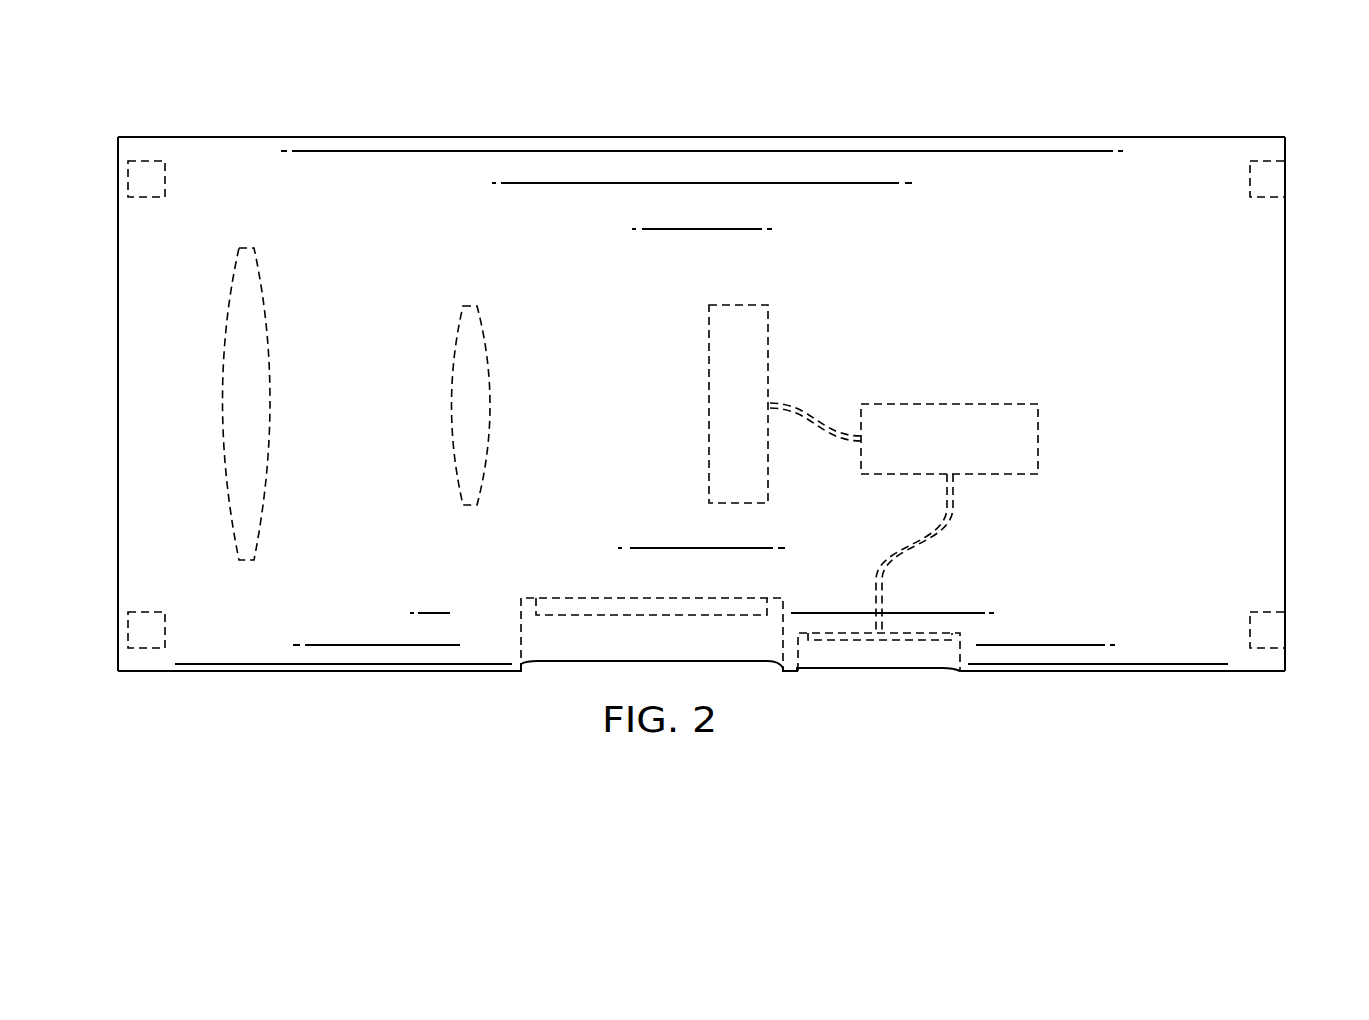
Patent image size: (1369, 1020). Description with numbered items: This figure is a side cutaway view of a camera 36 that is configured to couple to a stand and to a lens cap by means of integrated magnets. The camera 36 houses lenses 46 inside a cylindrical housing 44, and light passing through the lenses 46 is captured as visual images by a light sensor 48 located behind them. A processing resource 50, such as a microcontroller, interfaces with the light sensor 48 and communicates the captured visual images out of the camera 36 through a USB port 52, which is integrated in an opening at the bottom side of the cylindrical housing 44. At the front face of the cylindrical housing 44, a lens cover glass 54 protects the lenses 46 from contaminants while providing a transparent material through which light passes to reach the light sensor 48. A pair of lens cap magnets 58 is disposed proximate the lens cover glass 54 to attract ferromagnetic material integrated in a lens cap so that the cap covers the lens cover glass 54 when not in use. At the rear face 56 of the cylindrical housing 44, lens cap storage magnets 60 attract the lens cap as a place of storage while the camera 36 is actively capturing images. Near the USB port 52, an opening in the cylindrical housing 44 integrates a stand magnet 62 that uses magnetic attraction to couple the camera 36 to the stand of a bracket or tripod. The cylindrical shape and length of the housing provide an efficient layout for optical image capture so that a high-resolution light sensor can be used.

The camera 36 is at (890, 67).
The cylindrical housing 44 is at (553, 137).
The lenses 46 is at (230, 303).
The light sensor 48 is at (770, 363).
The processing resource 50 is at (977, 404).
The USB port 52 is at (961, 649).
The lens cover glass 54 is at (118, 490).
The rear face 56 is at (1285, 490).
The lens cap magnets 58 is at (165, 179).
The lens cap storage magnets 60 is at (1250, 179).
The stand magnet 62 is at (553, 616).